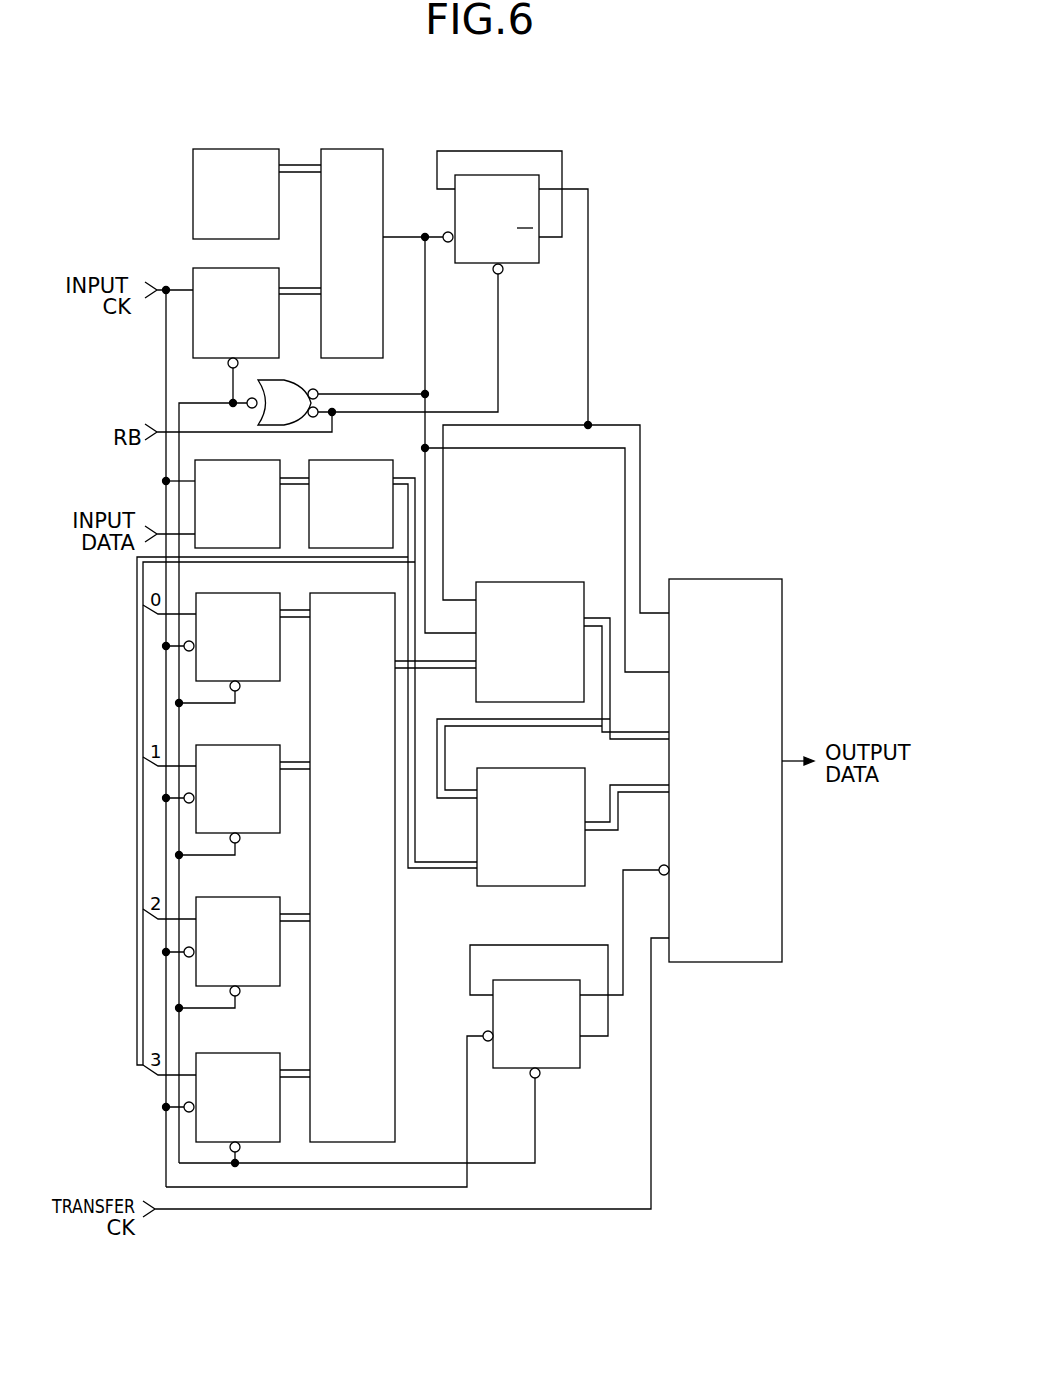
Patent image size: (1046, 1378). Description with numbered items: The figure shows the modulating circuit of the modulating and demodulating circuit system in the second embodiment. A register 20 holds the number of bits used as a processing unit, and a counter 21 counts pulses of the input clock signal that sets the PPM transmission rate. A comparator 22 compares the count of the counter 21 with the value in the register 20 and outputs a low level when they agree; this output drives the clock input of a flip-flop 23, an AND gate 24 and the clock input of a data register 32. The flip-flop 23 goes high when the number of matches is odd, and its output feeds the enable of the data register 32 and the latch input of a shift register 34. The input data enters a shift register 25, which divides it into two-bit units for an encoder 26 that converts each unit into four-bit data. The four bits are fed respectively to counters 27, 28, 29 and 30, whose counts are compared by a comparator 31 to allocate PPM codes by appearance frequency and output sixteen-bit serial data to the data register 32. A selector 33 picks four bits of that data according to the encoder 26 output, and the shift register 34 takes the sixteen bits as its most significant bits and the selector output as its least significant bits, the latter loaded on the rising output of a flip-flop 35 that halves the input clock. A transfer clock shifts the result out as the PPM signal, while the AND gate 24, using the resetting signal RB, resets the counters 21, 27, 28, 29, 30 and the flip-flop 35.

The register 20 is at (279, 153).
The counter 21 is at (279, 272).
The comparator 22 is at (384, 192).
The flip-flop 23 is at (520, 265).
The AND gate 24 is at (292, 380).
The shift register 25 is at (249, 453).
The encoder 26 is at (369, 453).
The counter 27 is at (249, 586).
The counter 28 is at (249, 738).
The counter 29 is at (249, 890).
The counter 30 is at (249, 1046).
The comparator 31 is at (365, 586).
The data register 32 is at (551, 575).
The selector 33 is at (553, 761).
The shift register 34 is at (753, 572).
The flip-flop 35 is at (553, 973).